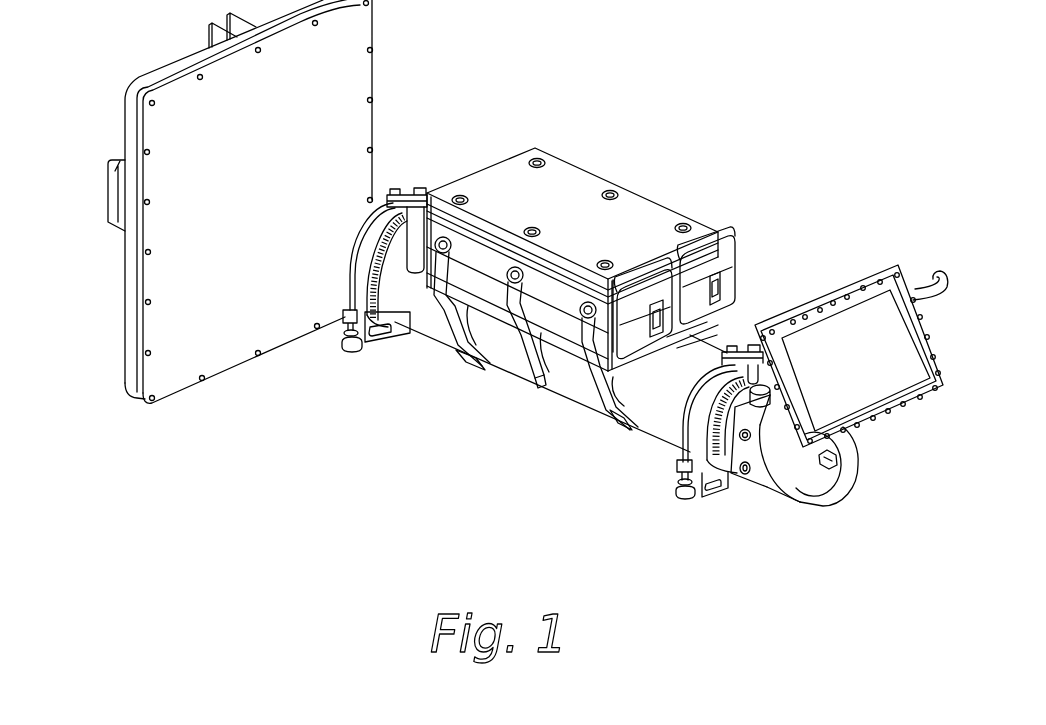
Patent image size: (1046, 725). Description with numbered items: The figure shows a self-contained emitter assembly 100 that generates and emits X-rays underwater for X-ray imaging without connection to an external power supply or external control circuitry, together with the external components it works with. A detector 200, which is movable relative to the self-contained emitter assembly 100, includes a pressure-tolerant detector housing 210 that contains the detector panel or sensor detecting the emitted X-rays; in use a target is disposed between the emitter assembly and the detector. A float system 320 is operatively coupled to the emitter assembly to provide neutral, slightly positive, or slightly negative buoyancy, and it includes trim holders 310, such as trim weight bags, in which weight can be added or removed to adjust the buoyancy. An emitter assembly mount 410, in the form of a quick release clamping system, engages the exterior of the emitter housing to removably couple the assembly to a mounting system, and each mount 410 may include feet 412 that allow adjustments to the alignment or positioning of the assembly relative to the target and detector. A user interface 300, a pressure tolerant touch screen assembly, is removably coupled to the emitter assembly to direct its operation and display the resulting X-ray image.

The self-contained emitter assembly 100 is at (583, 400).
The detector 200 is at (232, 370).
The detector housing 210 is at (123, 352).
The user interface 300 is at (877, 310).
The trim holder 310 is at (735, 262).
The float system 320 is at (628, 222).
The emitter assembly mount 410 is at (418, 183).
The foot 412 is at (690, 502).